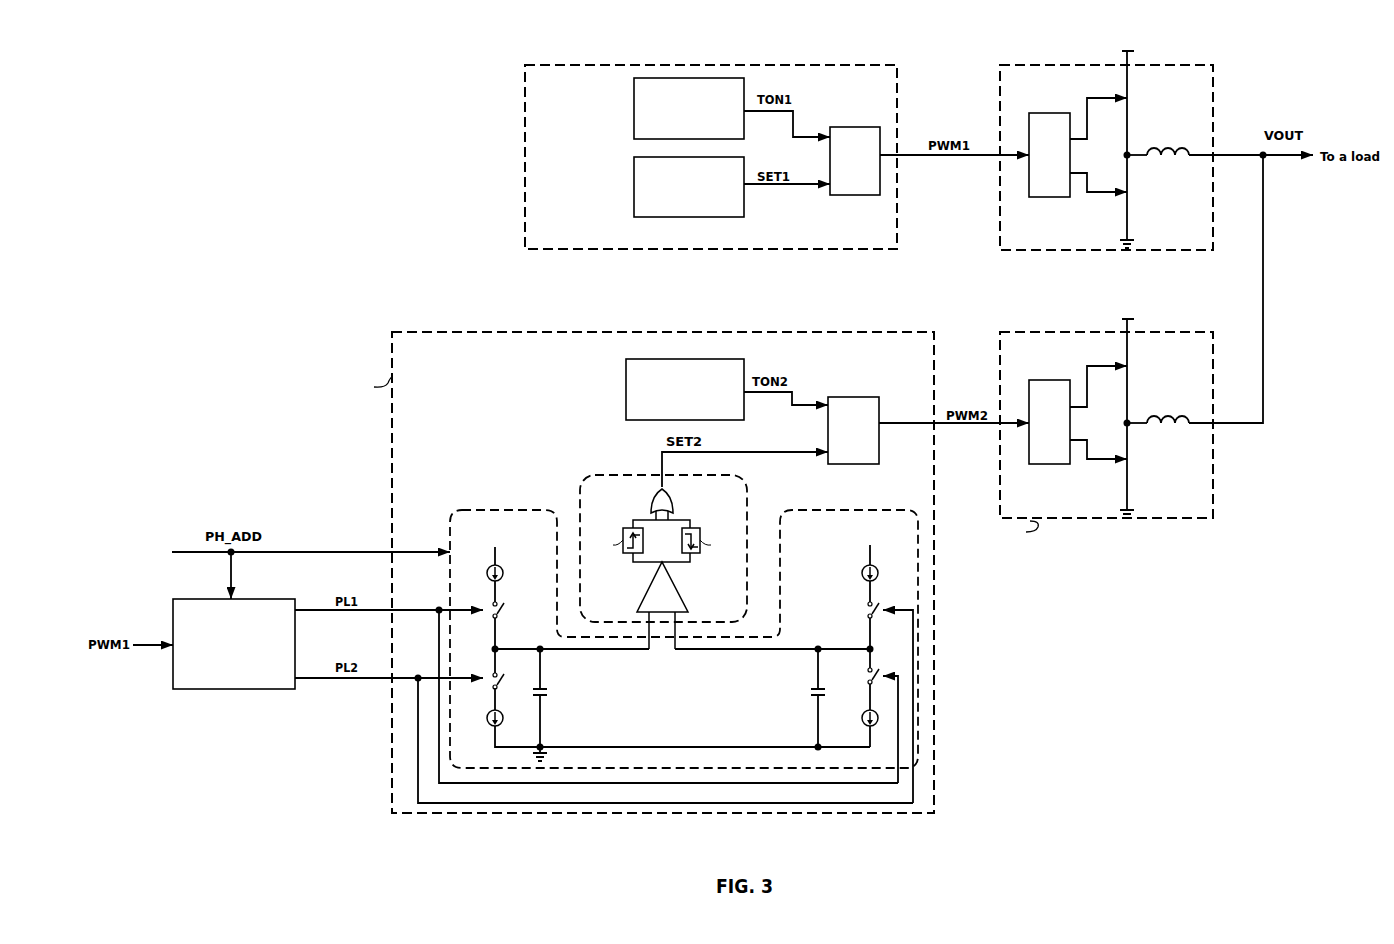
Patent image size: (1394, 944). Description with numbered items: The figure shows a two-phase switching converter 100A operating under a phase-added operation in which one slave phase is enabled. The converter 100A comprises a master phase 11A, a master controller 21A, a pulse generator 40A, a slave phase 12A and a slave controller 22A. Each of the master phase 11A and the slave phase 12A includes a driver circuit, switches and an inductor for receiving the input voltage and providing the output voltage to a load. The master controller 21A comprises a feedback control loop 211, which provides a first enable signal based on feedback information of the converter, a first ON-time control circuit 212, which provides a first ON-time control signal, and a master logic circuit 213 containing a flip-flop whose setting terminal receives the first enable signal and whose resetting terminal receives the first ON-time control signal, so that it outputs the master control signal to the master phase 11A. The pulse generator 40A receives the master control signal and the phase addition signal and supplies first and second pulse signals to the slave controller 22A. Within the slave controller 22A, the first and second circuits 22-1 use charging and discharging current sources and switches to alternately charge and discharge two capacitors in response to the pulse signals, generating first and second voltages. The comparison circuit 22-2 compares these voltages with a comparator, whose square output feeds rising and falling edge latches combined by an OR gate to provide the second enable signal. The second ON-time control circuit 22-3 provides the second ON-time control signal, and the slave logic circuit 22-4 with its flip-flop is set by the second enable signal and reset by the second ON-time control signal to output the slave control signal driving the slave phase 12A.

The two-phase switching converter 100A is at (458, 72).
The master controller 21A is at (565, 94).
The first ON-time control circuit 212 is at (634, 128).
The feedback control loop 211 is at (634, 208).
The master logic circuit 213 is at (836, 196).
The master phase 11A is at (1038, 244).
The slave phase 12A is at (1037, 512).
The slave controller 22A is at (433, 362).
The first and second circuits 22-1 is at (505, 508).
The comparison circuit 22-2 is at (620, 475).
The second ON-time control circuit 22-3 is at (626, 405).
The slave logic circuit 22-4 is at (862, 467).
The pulse generator 40A is at (247, 662).